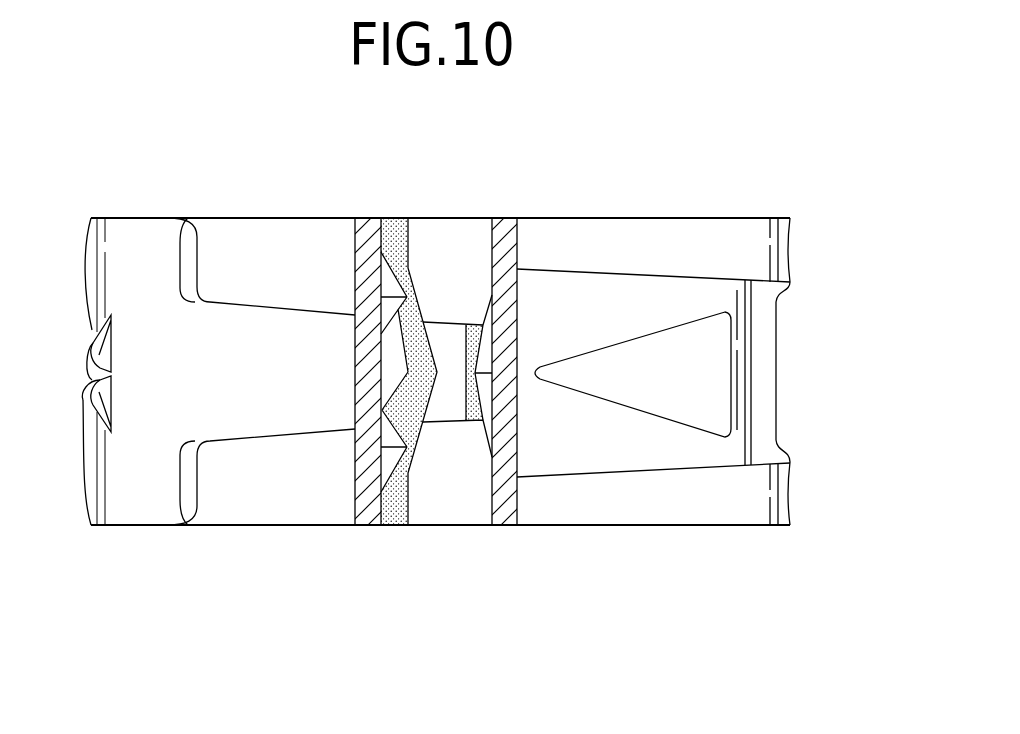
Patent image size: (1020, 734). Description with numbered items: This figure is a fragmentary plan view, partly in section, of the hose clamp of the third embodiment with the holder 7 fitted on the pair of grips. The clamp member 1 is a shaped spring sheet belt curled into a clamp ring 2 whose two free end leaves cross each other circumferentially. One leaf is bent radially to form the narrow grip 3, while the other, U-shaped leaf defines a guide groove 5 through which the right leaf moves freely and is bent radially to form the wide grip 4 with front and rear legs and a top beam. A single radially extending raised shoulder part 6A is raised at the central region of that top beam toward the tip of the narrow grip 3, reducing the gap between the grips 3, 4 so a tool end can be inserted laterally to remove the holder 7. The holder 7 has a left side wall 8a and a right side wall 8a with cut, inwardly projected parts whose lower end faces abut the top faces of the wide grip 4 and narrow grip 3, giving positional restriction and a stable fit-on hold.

The clamp member 1 is at (676, 199).
The clamp ring 2 is at (142, 512).
The narrow grip 3 is at (477, 345).
The wide grip 4 is at (393, 222).
The guide groove 5 is at (614, 458).
The raised shoulder part 6A is at (425, 320).
The holder 7 is at (432, 372).
The side wall 8a is at (352, 488).